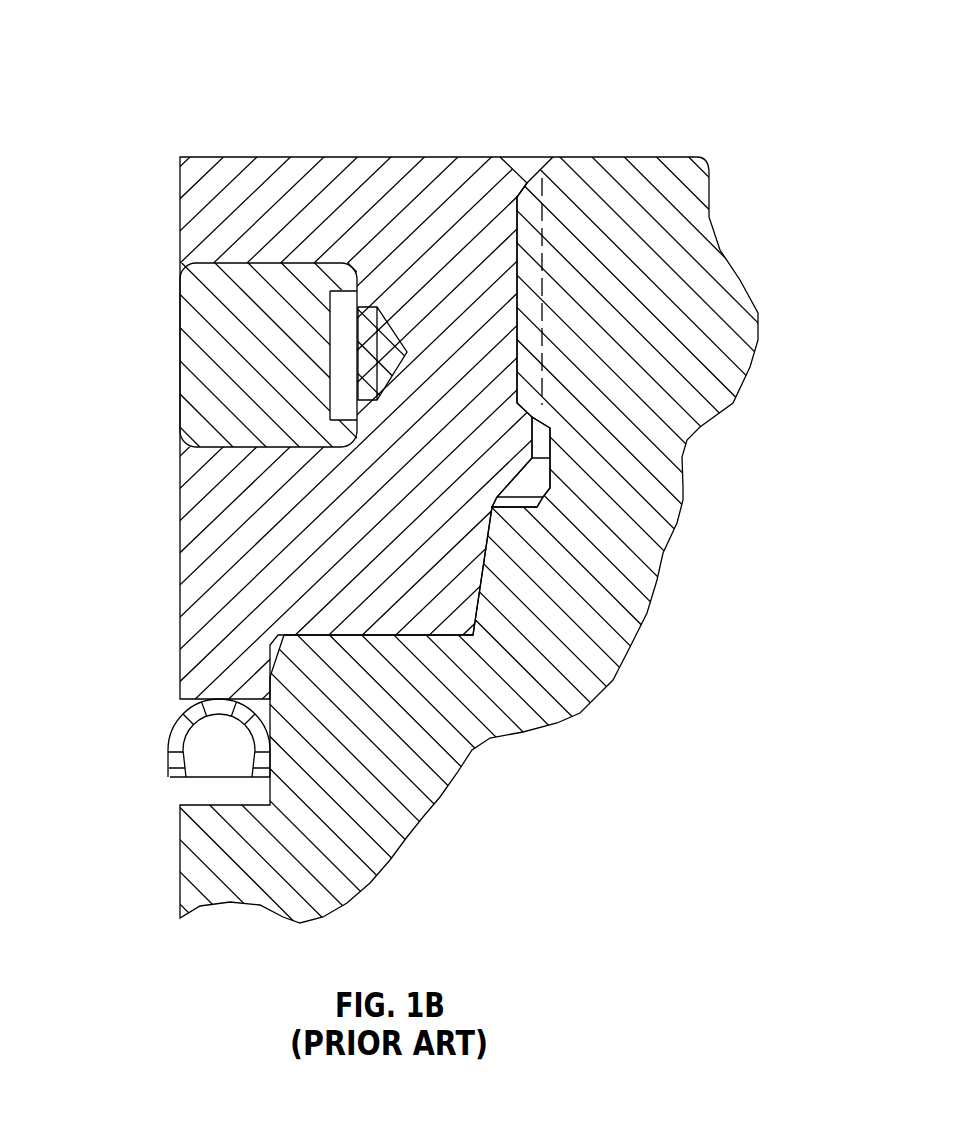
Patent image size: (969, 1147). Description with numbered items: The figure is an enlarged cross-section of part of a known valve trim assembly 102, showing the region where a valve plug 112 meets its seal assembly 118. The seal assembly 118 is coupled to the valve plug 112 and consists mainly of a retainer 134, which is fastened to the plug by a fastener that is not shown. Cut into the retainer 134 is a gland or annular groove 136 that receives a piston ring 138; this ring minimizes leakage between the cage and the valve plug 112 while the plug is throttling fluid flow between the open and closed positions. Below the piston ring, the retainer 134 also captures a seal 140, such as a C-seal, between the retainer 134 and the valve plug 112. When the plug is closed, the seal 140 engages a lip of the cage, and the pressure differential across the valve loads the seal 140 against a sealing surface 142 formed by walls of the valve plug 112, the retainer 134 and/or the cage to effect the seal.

The valve trim assembly 102 is at (137, 113).
The valve plug 112 is at (447, 787).
The seal assembly 118 is at (133, 220).
The retainer 134 is at (180, 602).
The annular groove 136 is at (360, 318).
The piston ring 138 is at (180, 347).
The seal 140 is at (170, 753).
The sealing surface 142 is at (180, 707).